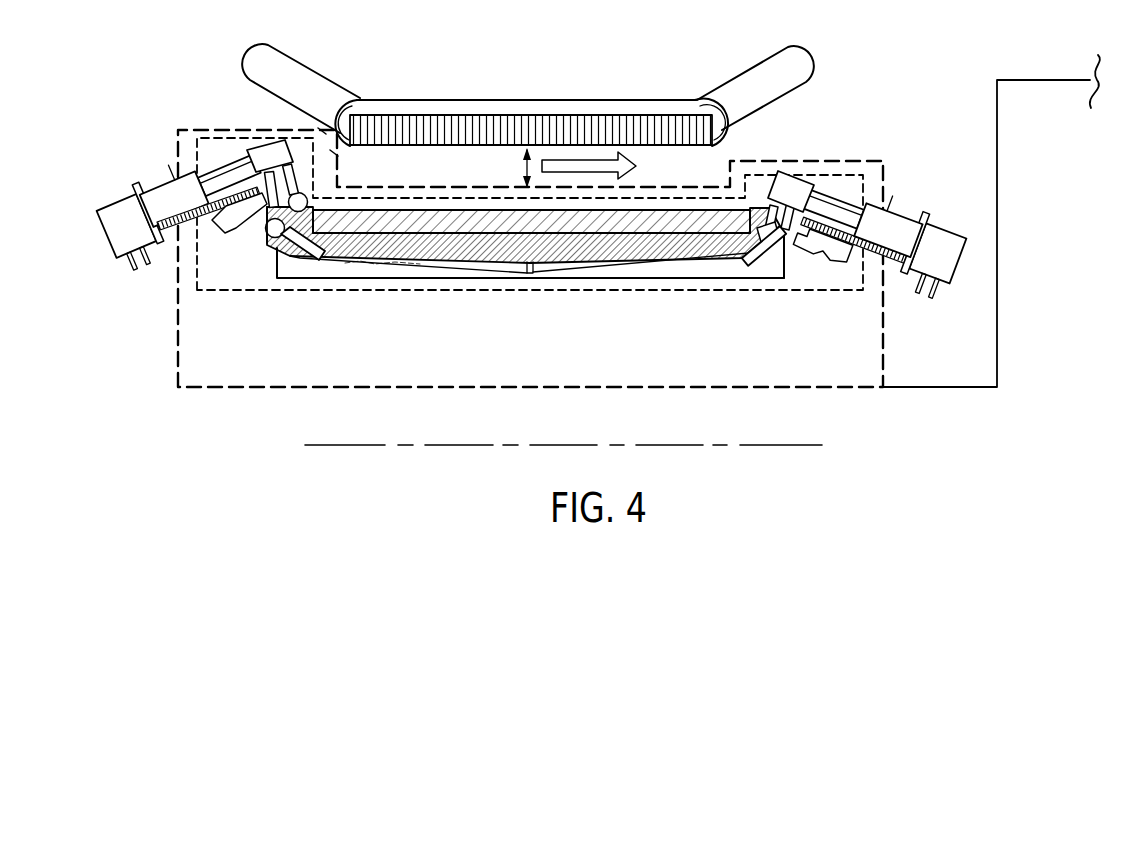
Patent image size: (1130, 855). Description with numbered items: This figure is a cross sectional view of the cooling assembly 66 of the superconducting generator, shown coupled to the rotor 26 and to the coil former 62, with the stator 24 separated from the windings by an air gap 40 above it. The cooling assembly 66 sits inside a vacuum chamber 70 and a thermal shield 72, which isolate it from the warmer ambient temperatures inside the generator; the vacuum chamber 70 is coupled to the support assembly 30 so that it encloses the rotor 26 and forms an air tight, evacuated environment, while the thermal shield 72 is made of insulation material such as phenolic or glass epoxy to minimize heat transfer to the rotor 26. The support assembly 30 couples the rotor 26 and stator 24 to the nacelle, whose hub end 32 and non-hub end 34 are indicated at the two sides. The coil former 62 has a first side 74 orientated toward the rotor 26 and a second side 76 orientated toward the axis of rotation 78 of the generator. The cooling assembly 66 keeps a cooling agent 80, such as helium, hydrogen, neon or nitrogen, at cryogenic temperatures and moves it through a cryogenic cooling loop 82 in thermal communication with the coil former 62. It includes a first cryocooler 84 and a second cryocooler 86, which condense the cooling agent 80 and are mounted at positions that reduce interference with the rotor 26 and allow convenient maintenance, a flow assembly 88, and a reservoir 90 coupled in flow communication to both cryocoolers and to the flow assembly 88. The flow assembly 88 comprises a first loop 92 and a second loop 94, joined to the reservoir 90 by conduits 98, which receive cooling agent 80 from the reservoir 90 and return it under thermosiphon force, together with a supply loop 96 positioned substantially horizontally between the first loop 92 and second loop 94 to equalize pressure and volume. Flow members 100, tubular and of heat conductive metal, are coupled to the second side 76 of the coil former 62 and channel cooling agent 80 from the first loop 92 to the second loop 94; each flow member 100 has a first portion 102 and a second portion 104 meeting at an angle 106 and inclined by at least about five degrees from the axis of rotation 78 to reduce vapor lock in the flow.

The stator 24 is at (562, 102).
The rotor 26 is at (260, 220).
The support assembly 30 is at (998, 138).
The hub end 32 is at (903, 181).
The non-hub end 34 is at (214, 241).
The air gap 40 is at (523, 166).
The coil former 62 is at (773, 198).
The cooling assembly 66 is at (221, 149).
The vacuum chamber 70 is at (178, 129).
The thermal shield 72 is at (186, 151).
The first side 74 is at (263, 168).
The second side 76 is at (320, 264).
The axis of rotation 78 is at (800, 445).
The cooling agent 80 is at (381, 262).
The cryogenic cooling loop 82 is at (277, 262).
The first cryocooler 84 is at (160, 203).
The second cryocooler 86 is at (907, 238).
The flow assembly 88 is at (360, 280).
The reservoir 90 is at (310, 172).
The first loop 92 is at (258, 245).
The second loop 94 is at (790, 244).
The supply loop 96 is at (693, 280).
The conduits 98 is at (323, 160).
The flow members 100 is at (432, 270).
The first portion 102 is at (480, 270).
The second portion 104 is at (619, 268).
The angle 106 is at (532, 274).